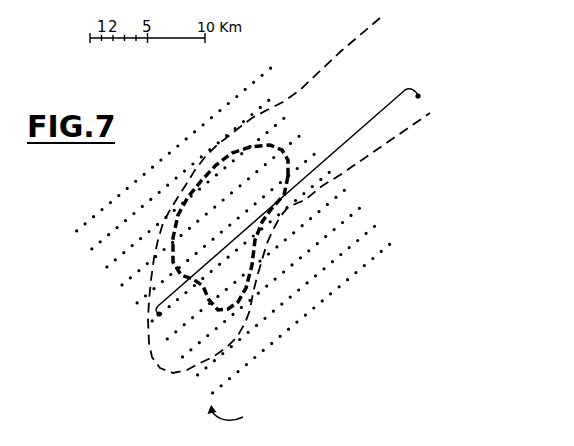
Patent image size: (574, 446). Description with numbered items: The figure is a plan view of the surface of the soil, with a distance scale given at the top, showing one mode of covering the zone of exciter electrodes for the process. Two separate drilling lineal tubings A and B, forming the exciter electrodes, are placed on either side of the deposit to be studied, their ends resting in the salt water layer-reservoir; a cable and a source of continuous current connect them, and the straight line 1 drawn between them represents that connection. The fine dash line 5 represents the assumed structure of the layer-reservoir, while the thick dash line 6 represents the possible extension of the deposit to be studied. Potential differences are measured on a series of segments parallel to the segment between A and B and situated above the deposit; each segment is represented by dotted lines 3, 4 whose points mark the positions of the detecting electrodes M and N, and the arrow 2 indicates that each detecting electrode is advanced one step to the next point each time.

The straight traverse line between points A and B 1 is at (360, 128).
The direction arrow from N to M 2 is at (224, 409).
The dotted zone (inner dot field) 3 is at (357, 243).
The dotted zone (outer dot row) 4 is at (378, 255).
The outer boundary contour (dashed) 5 is at (299, 89).
The inner anomaly contour (thick dashed) 6 is at (276, 143).